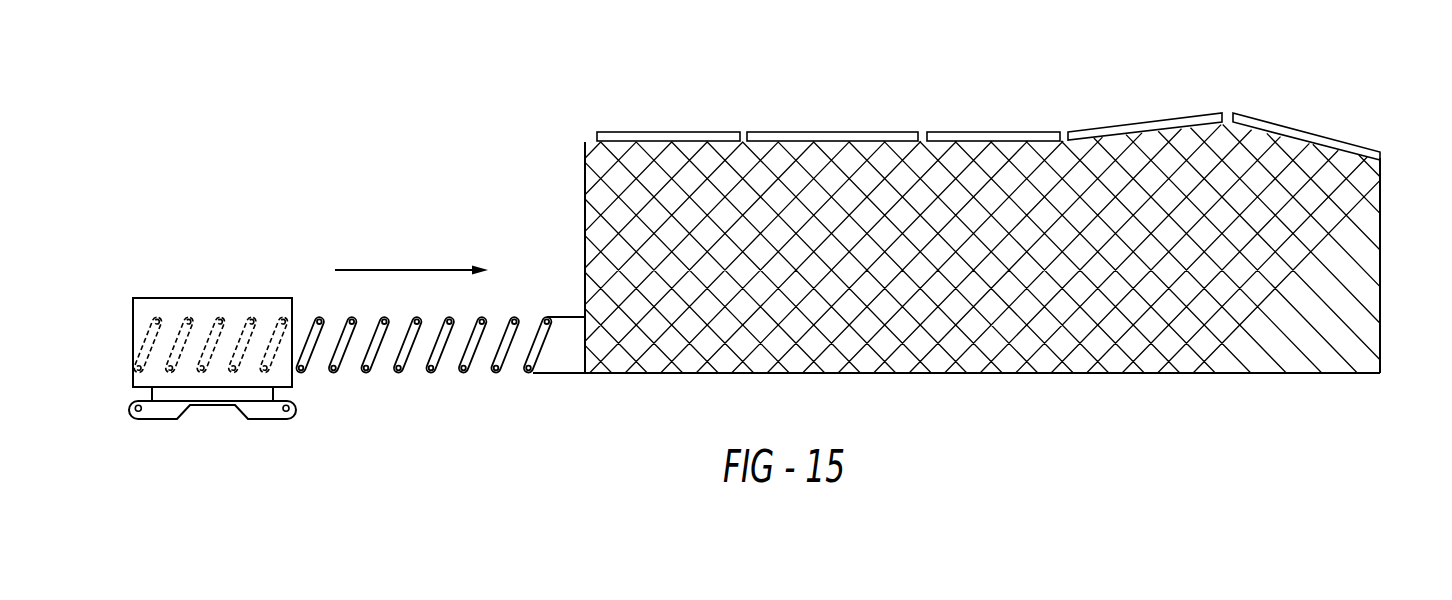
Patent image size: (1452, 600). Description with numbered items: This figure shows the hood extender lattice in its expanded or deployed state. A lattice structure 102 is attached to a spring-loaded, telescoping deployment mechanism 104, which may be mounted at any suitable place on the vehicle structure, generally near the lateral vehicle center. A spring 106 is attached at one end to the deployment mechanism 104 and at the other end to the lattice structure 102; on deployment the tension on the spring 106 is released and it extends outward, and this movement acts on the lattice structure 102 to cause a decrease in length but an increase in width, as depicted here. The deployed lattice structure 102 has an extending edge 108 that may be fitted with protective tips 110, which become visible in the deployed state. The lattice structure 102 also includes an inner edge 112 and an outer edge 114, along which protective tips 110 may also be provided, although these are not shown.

The lattice structure 102 is at (1012, 270).
The deployment mechanism 104 is at (208, 298).
The spring 106 is at (401, 370).
The extending edge 108 is at (655, 141).
The protective tips 110 is at (838, 137).
The inner edge 112 is at (585, 215).
The outer edge 114 is at (1380, 238).